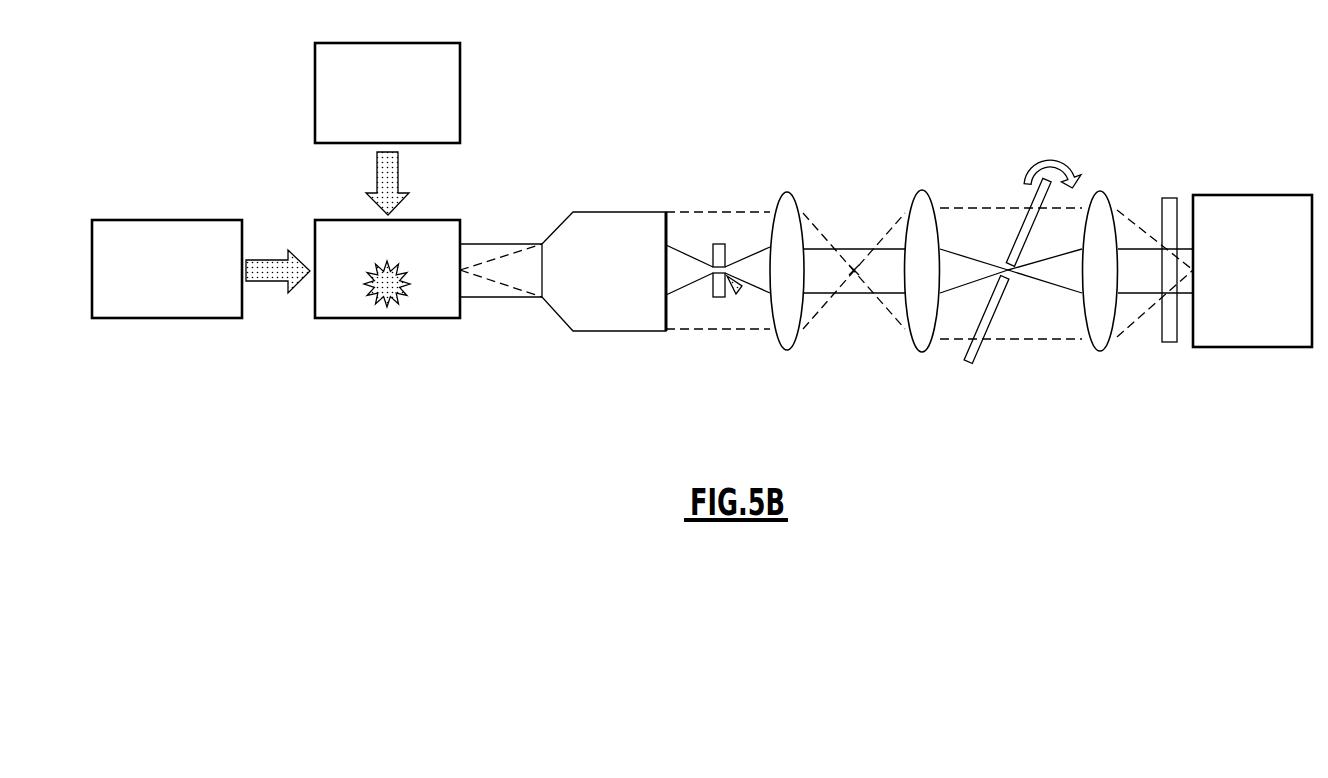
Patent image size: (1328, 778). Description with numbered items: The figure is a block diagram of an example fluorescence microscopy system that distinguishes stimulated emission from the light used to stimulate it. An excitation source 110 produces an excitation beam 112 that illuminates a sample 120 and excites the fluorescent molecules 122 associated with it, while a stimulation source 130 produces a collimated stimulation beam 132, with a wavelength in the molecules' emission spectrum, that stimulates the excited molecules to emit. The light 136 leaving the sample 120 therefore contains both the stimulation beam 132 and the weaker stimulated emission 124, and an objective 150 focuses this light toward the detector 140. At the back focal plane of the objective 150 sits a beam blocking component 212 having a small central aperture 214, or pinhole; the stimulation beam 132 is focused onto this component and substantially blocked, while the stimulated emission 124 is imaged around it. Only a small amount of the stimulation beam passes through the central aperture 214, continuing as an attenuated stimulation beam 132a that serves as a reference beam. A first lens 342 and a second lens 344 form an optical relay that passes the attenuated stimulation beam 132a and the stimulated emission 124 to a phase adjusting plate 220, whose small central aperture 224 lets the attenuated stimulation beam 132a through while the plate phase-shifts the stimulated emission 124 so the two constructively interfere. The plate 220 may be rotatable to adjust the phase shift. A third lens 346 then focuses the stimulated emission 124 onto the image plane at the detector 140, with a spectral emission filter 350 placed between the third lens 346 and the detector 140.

The excitation source 110 is at (460, 93).
The excitation beam 112 is at (377, 174).
The stimulation source 130 is at (170, 220).
The stimulation beam 132 is at (280, 282).
The attenuated stimulation beam 132a is at (855, 283).
The sample 120 is at (422, 319).
The fluorescent molecules 122 is at (380, 302).
The light from the sample 136 is at (499, 298).
The objective 150 is at (598, 212).
The stimulated emission 124 is at (960, 193).
The beam blocking component 212 is at (712, 246).
The central aperture 214 is at (738, 294).
The first lens 342 is at (788, 193).
The second lens 344 is at (921, 216).
The central aperture 224 is at (1000, 252).
The phase adjusting plate 220 is at (993, 320).
The third lens 346 is at (1100, 193).
The spectral emission filter 350 is at (1170, 343).
The detector 140 is at (1256, 195).